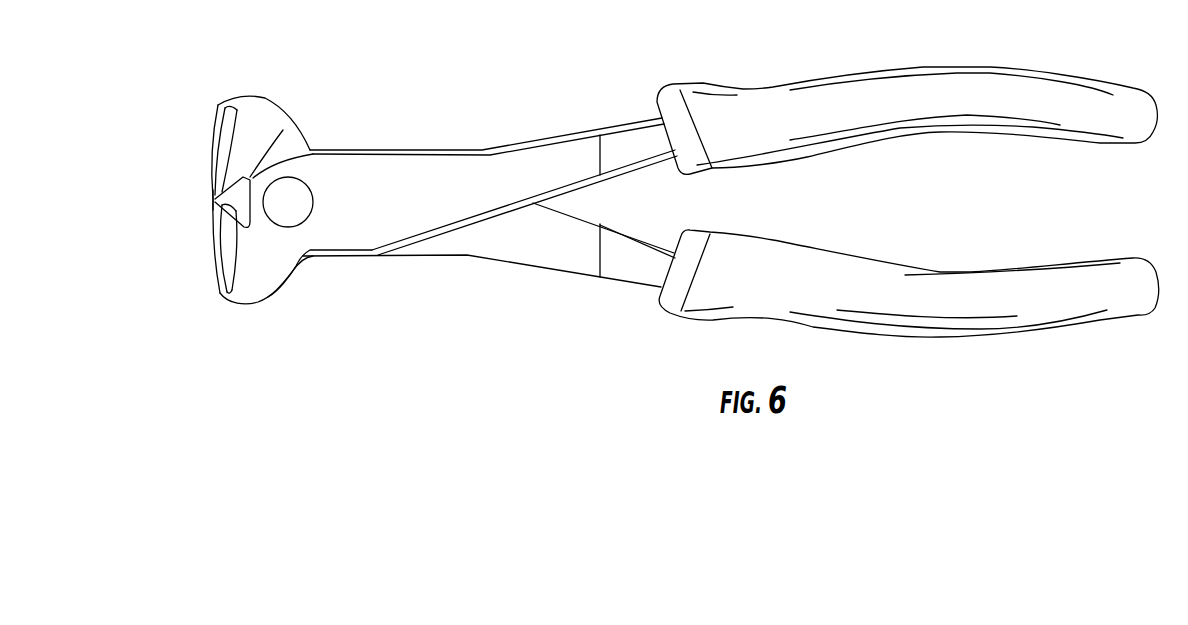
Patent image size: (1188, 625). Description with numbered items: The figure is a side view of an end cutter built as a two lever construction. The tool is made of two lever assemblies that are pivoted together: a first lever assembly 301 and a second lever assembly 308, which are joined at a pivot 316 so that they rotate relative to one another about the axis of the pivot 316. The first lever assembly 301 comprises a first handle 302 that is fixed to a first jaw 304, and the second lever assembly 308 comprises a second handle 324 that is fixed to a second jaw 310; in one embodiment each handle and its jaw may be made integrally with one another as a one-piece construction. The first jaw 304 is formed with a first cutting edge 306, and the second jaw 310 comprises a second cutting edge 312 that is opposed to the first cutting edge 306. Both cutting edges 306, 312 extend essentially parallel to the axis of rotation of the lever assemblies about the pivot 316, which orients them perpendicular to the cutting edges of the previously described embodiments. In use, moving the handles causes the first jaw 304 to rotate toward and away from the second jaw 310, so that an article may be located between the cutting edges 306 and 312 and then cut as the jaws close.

The first lever assembly 301 is at (875, 252).
The second lever assembly 308 is at (923, 60).
The first jaw 304 is at (260, 110).
The second jaw 310 is at (260, 285).
The first cutting edge 306 is at (213, 200).
The second cutting edge 312 is at (212, 206).
The pivot 316 is at (297, 203).
The second handle 324 is at (628, 140).
The first handle 302 is at (632, 270).